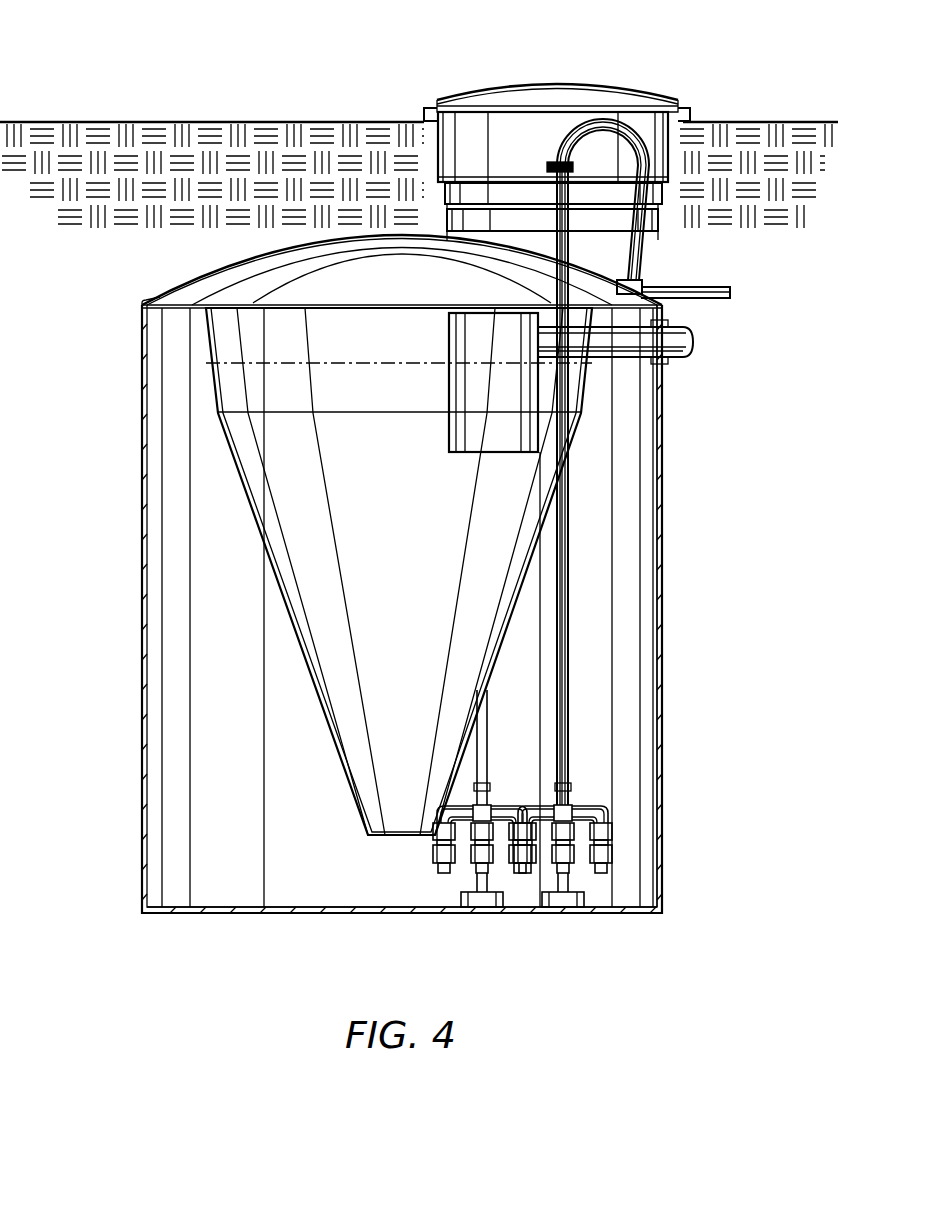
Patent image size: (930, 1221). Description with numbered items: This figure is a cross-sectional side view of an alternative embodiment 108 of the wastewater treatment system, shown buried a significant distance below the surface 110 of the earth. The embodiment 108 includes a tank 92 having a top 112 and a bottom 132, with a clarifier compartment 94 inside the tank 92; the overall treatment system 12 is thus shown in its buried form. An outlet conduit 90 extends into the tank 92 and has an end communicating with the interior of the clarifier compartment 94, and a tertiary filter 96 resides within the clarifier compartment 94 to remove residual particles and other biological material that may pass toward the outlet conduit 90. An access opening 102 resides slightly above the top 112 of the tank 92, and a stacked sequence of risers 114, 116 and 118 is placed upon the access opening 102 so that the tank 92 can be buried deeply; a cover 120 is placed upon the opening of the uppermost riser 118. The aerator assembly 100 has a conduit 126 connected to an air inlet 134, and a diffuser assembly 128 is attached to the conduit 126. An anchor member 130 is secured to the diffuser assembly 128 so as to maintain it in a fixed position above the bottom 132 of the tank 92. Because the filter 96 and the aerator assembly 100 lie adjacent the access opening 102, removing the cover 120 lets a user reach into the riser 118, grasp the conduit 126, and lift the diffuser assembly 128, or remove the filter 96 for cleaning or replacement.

The surface of the earth 110 is at (168, 122).
The cover 120 is at (632, 84).
The uppermost riser 118 is at (664, 140).
The riser 116 is at (675, 192).
The riser 114 is at (665, 227).
The air inlet 134 is at (700, 298).
The outlet conduit 90 is at (694, 361).
The tank 92 is at (663, 418).
The tank 12 is at (664, 517).
The aerator assembly 100 is at (569, 598).
The alternative embodiment 108 is at (692, 617).
The conduit 126 is at (569, 712).
The diffuser assembly 128 is at (600, 815).
The anchor member 130 is at (570, 907).
The bottom of the tank 132 is at (232, 905).
The clarifier compartment 94 is at (360, 766).
The tertiary filter 96 is at (452, 425).
The access opening 102 is at (548, 243).
The top of tank 112 is at (188, 284).